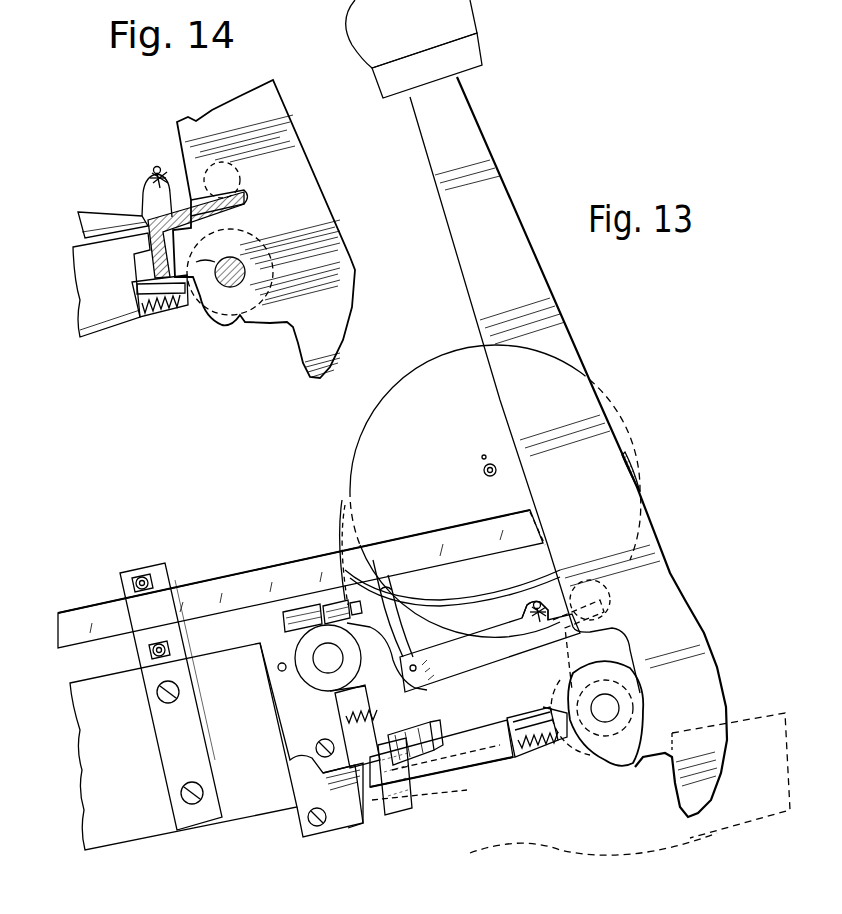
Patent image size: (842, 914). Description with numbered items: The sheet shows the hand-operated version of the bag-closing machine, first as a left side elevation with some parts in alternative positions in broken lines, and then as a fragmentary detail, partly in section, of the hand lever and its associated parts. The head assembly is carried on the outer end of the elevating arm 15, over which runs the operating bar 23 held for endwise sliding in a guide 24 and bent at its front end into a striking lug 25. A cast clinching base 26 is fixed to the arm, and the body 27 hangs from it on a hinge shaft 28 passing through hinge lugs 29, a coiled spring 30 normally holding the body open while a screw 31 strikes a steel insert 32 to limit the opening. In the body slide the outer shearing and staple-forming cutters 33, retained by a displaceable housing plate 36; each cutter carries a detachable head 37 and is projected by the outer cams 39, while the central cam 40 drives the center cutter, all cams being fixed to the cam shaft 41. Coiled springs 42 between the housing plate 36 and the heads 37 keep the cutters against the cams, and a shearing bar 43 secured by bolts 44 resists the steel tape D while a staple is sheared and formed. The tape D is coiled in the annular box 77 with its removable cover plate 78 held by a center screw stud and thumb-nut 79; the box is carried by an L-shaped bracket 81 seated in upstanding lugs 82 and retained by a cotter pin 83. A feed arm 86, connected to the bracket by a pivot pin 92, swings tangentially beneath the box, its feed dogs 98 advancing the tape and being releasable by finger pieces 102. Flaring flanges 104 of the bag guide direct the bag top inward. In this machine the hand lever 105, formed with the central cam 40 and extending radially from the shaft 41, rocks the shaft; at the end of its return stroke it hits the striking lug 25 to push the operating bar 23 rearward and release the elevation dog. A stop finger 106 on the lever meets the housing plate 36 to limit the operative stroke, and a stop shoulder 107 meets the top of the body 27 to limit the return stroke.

In FIG. 13, the elevating arm 15 is at (205, 673).
In FIG. 13, the operating bar 23 is at (74, 615).
In FIG. 13, the guide 24 is at (158, 603).
In FIG. 13, the striking lug 25 is at (545, 514).
In FIG. 13, the clinching base 26 is at (293, 730).
In FIG. 14, the body 27 is at (80, 307).
In FIG. 13, the body 27 is at (455, 752).
In FIG. 13, the hinge shaft 28 is at (327, 660).
In FIG. 13, the hinge lugs 29 is at (280, 670).
In FIG. 13, the coiled spring 30 is at (372, 717).
In FIG. 13, the screw 31 is at (392, 580).
In FIG. 13, the steel insert 32 is at (295, 610).
In FIG. 14, the outer shearing and staple-forming cutters 33 is at (153, 318).
In FIG. 13, the outer shearing and staple-forming cutters 33 is at (530, 720).
In FIG. 14, the housing plate 36 is at (111, 325).
In FIG. 13, the housing plate 36 is at (474, 770).
In FIG. 14, the detachable head 37 is at (198, 305).
In FIG. 13, the detachable head 37 is at (570, 745).
In FIG. 14, the outer cams 39 is at (237, 320).
In FIG. 13, the outer cams 39 is at (600, 770).
In FIG. 14, the central cam 40 is at (227, 297).
In FIG. 14, the cam shaft 41 is at (247, 273).
In FIG. 13, the cam shaft 41 is at (620, 707).
In FIG. 14, the coiled springs 42 is at (172, 316).
In FIG. 13, the coiled springs 42 is at (527, 750).
In FIG. 13, the shearing bar 43 is at (385, 768).
In FIG. 13, the bolts 44 is at (437, 743).
In FIG. 13, the annular box 77 is at (640, 472).
In FIG. 13, the removable cover plate 78 is at (362, 432).
In FIG. 13, the center screw stud and thumb-nut 79 is at (488, 477).
In FIG. 14, the L-shaped bracket 81 is at (152, 172).
In FIG. 13, the L-shaped bracket 81 is at (528, 616).
In FIG. 14, the upstanding lugs 82 is at (168, 165).
In FIG. 13, the upstanding lugs 82 is at (548, 600).
In FIG. 14, the cotter pin 83 is at (157, 167).
In FIG. 13, the cotter pin 83 is at (536, 602).
In FIG. 14, the feed arm 86 is at (102, 210).
In FIG. 13, the feed arm 86 is at (490, 646).
In FIG. 14, the pivot pin 92 is at (240, 178).
In FIG. 13, the pivot pin 92 is at (592, 598).
In FIG. 13, the feed dogs 98 is at (400, 646).
In FIG. 13, the finger pieces 102 is at (418, 582).
In FIG. 13, the flaring flanges 104 is at (347, 817).
In FIG. 14, the hand lever 105 is at (267, 117).
In FIG. 13, the hand lever 105 is at (495, 192).
In FIG. 14, the stop finger 106 is at (325, 370).
In FIG. 13, the stop finger 106 is at (693, 812).
In FIG. 14, the stop shoulder 107 is at (203, 195).
In FIG. 13, the stop shoulder 107 is at (600, 625).
In FIG. 13, the steel tape D is at (340, 528).